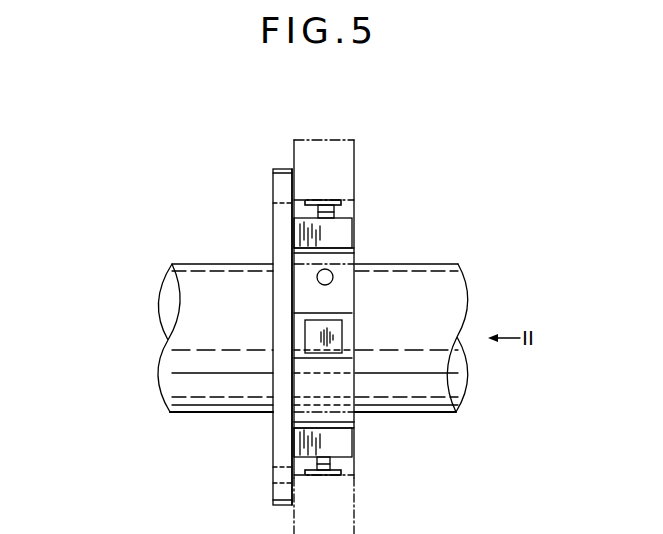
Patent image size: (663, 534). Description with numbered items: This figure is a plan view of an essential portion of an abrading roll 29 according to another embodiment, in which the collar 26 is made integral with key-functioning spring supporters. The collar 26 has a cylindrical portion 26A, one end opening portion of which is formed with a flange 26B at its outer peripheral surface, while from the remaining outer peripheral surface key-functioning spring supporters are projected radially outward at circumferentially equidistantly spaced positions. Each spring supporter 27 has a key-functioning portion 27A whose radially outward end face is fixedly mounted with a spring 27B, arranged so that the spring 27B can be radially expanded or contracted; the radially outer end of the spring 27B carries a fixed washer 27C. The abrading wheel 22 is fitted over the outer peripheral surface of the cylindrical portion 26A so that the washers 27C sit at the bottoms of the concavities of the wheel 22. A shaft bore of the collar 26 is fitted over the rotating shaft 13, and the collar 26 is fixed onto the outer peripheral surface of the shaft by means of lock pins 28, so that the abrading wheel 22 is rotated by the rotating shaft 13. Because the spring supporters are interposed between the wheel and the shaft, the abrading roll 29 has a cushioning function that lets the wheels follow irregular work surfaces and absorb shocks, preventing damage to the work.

The rotating shaft 13 is at (188, 270).
The abrading wheel 22 is at (300, 140).
The collar 26 is at (272, 400).
The cylindrical portion 26A is at (355, 253).
The flange 26B is at (273, 487).
The spring supporter 27 is at (288, 217).
The key-functioning portion 27A is at (345, 233).
The spring 27B is at (336, 217).
The washer 27C is at (330, 203).
The lock pin 28 is at (319, 273).
The abrading roll 29 is at (144, 336).